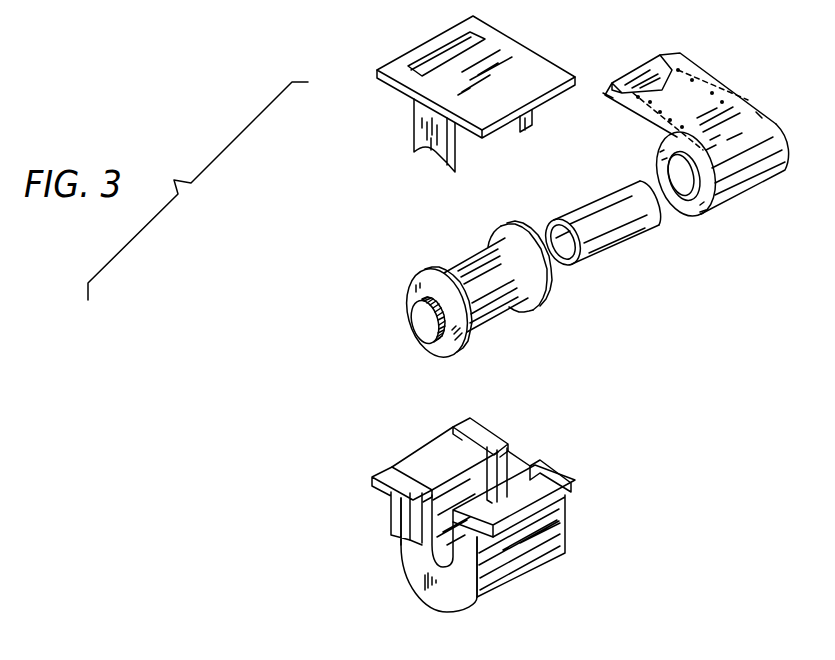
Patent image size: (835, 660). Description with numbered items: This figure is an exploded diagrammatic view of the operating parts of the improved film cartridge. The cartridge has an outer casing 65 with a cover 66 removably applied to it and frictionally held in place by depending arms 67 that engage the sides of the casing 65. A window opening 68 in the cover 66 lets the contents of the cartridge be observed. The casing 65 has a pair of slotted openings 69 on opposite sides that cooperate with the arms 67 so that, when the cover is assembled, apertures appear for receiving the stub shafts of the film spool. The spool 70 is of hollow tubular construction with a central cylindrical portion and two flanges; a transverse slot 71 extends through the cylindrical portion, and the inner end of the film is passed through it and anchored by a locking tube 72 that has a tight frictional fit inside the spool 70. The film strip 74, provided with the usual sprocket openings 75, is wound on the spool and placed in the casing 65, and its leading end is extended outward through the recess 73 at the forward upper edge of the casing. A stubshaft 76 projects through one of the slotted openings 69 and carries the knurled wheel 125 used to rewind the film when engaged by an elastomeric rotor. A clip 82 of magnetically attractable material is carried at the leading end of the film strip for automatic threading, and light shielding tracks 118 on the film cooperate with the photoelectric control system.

The outer casing 65 is at (547, 557).
The cover 66 is at (422, 85).
The depending arms 67 is at (430, 160).
The window opening 68 is at (468, 46).
The slotted openings 69 is at (515, 472).
The spool 70 is at (497, 317).
The transverse slot 71 is at (470, 268).
The locking tube 72 is at (613, 243).
The recess 73 is at (433, 462).
The film strip 74 is at (753, 183).
The sprocket openings 75 is at (747, 103).
The stubshaft 76 is at (438, 340).
The clip 82 is at (632, 65).
The light shielding tracks 118 is at (700, 87).
The knurled wheel 125 is at (410, 304).